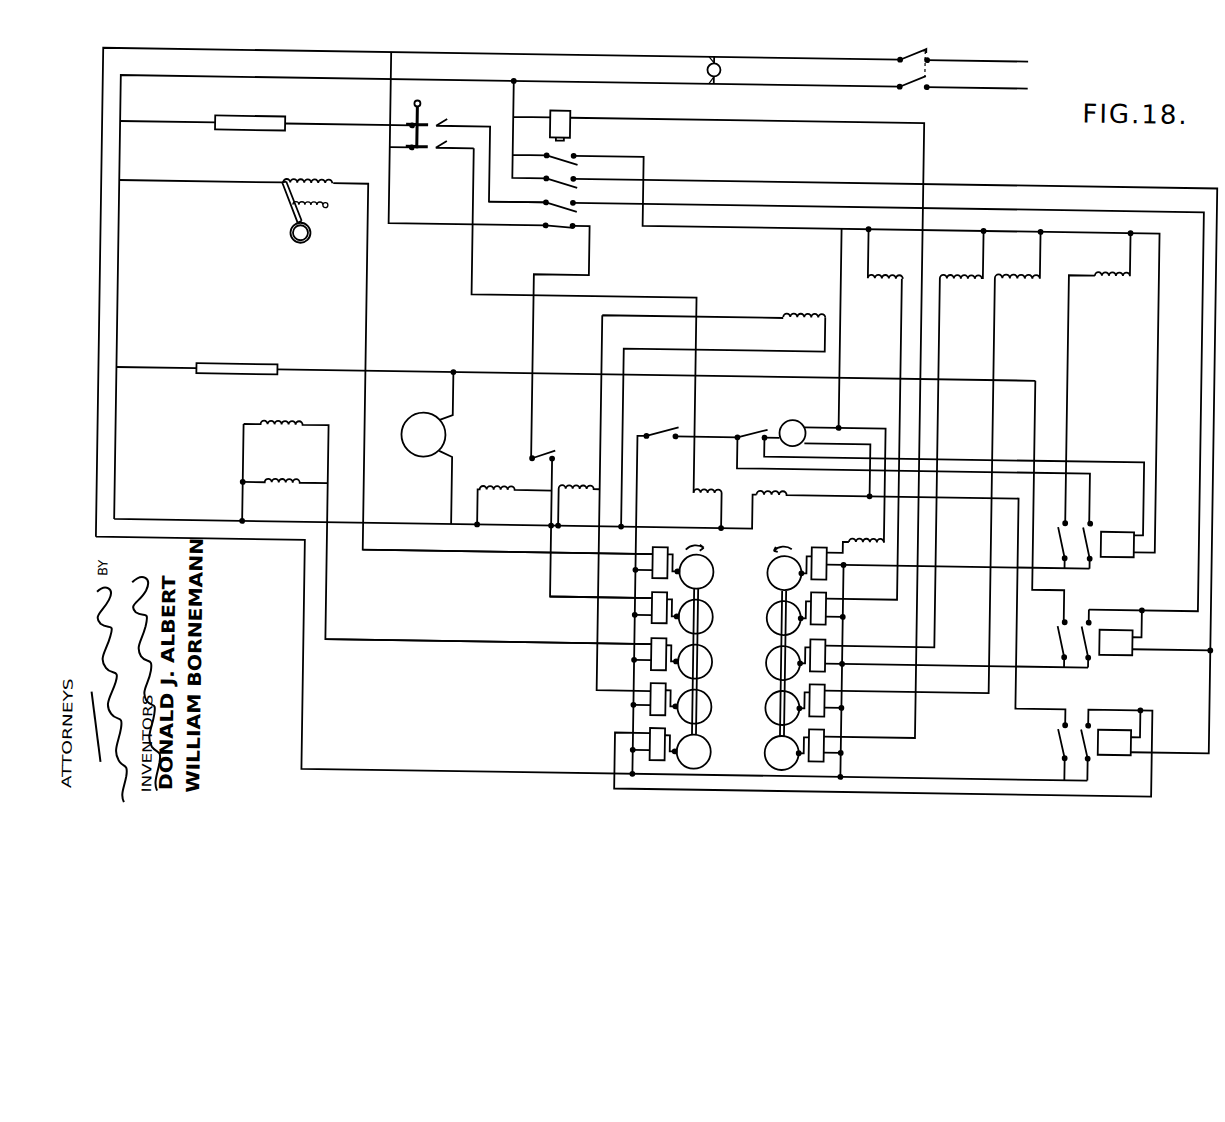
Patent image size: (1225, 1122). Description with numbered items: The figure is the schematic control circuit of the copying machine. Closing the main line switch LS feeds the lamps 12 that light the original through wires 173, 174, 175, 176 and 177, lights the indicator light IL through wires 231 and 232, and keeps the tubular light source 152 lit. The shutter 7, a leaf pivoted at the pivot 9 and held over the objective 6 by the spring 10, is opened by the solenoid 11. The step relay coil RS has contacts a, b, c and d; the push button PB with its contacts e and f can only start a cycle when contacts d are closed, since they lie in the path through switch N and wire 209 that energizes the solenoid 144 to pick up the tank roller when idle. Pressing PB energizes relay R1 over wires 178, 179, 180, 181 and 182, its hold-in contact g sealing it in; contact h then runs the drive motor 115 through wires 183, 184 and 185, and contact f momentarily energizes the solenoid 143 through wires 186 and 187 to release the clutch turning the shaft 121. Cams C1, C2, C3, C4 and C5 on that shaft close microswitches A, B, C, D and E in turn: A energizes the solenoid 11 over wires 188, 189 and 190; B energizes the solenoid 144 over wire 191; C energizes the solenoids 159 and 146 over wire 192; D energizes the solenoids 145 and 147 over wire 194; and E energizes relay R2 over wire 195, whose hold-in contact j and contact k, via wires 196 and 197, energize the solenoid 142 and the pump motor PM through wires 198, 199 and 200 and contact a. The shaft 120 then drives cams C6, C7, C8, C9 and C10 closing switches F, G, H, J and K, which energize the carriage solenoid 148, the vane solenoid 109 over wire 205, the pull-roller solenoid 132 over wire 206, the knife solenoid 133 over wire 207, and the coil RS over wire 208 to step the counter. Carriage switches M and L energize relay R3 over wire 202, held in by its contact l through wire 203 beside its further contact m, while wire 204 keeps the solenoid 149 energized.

The objective 6 is at (305, 248).
The shutter 7 is at (309, 237).
The pivot 9 is at (286, 208).
The spring 10 is at (318, 213).
The solenoid 11 is at (311, 182).
The lamps 12 is at (220, 136).
The solenoid 109 is at (886, 271).
The drive motor 115 is at (414, 424).
The shaft 120 is at (784, 598).
The shaft 121 is at (702, 595).
The solenoid 132 is at (957, 270).
The solenoid 133 is at (1013, 269).
The solenoid 142 is at (787, 496).
The solenoid 143 is at (718, 482).
The solenoid 144 is at (484, 495).
The solenoid 145 is at (564, 494).
The solenoid 146 is at (289, 484).
The solenoid 147 is at (809, 314).
The solenoid 148 is at (862, 536).
The solenoid 149 is at (1096, 274).
The tubular light source 152 is at (236, 370).
The solenoid 159 is at (296, 425).
The wire 173 is at (440, 775).
The wire 174 is at (410, 529).
The wire 175 is at (372, 110).
The wire 176 is at (316, 130).
The wire 177 is at (168, 131).
The wire 178 is at (484, 208).
The wire 179 is at (1187, 577).
The wire 180 is at (1184, 646).
The wire 181 is at (1202, 748).
The wire 182 is at (500, 90).
The wire 183 is at (1024, 380).
The wire 184 is at (455, 402).
The wire 185 is at (750, 345).
The wire 186 is at (470, 289).
The wire 187 is at (712, 518).
The wire 188 is at (626, 722).
The wire 189 is at (464, 556).
The wire 190 is at (172, 187).
The wire 191 is at (540, 598).
The wire 192 is at (407, 644).
The wire 194 is at (592, 624).
The wire 195 is at (994, 793).
The wire 196 is at (996, 775).
The wire 197 is at (1022, 684).
The wire 198 is at (830, 442).
The wire 199 is at (856, 412).
The wire 200 is at (1157, 400).
The wire 202 is at (1090, 455).
The wire 203 is at (940, 467).
The wire 204 is at (1068, 384).
The wire 205 is at (892, 358).
The wire 206 is at (888, 634).
The wire 207 is at (989, 632).
The wire 208 is at (898, 732).
The wire 209 is at (532, 360).
The wire 231 is at (702, 58).
The wire 232 is at (694, 84).
The push button PB is at (411, 117).
The step relay coil RS is at (554, 116).
The indicator light IL is at (716, 70).
The main line switch LS is at (961, 79).
The pump motor PM is at (793, 423).
The switch L is at (662, 432).
The switch M is at (758, 432).
The switch N is at (591, 514).
The contact pair RSa a is at (561, 151).
The contact pair RSb b is at (560, 174).
The contact pair RSc c is at (560, 198).
The contact pair RSd d is at (558, 236).
The contact PBe e is at (478, 155).
The contact PBf f is at (432, 142).
The hold-in contact Rg g is at (1086, 612).
The contact R1h h is at (1060, 618).
The hold-in contact R2j j is at (1090, 714).
The contact R2k k is at (1058, 727).
The hold-in contact l is at (1090, 513).
The contact m is at (1058, 519).
The relay R1 is at (1115, 643).
The relay R2 is at (1114, 743).
The relay R3 is at (1117, 545).
The microswitch A is at (656, 563).
The microswitch B is at (656, 608).
The microswitch C is at (655, 654).
The microswitch D is at (654, 699).
The microswitch E is at (653, 752).
The microswitch F is at (820, 662).
The microswitch G is at (822, 608).
The microswitch H is at (821, 655).
The microswitch J is at (820, 700).
The microswitch K is at (819, 754).
The cam C1 is at (714, 562).
The cam C2 is at (714, 608).
The cam C3 is at (714, 652).
The cam C4 is at (714, 698).
The cam C5 is at (714, 742).
The cam C6 is at (770, 578).
The cam C7 is at (770, 624).
The cam C8 is at (770, 663).
The cam C9 is at (770, 710).
The cam C10 is at (771, 758).